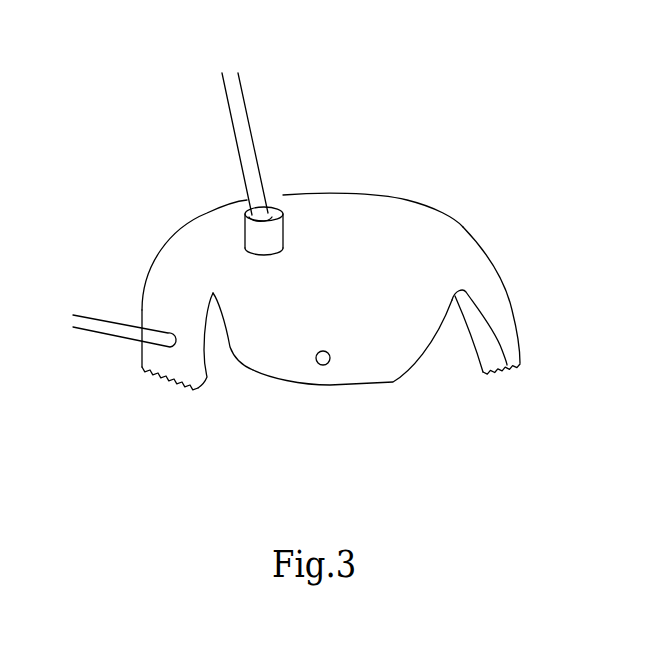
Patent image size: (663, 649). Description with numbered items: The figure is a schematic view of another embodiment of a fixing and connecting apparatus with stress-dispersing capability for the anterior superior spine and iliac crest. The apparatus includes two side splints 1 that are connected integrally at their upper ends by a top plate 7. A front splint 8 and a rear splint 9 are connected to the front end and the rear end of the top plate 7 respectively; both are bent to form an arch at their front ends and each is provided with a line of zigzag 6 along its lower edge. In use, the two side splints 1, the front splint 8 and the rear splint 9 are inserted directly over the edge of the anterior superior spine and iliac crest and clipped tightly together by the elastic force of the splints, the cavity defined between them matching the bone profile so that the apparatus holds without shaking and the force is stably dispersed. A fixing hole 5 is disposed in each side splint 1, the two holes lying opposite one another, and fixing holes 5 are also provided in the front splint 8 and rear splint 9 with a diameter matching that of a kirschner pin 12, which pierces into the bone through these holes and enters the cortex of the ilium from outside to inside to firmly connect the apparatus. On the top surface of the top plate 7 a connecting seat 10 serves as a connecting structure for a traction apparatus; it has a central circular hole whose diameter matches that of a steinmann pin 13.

The side splint 1 is at (378, 347).
The fixing hole 5 is at (315, 367).
The line of zigzag 6 is at (170, 385).
The top plate 7 is at (215, 235).
The front splint 8 is at (160, 360).
The rear splint 9 is at (512, 310).
The connecting seat 10 is at (283, 228).
The kirschner pin 12 is at (102, 327).
The steinmann pin 13 is at (257, 142).